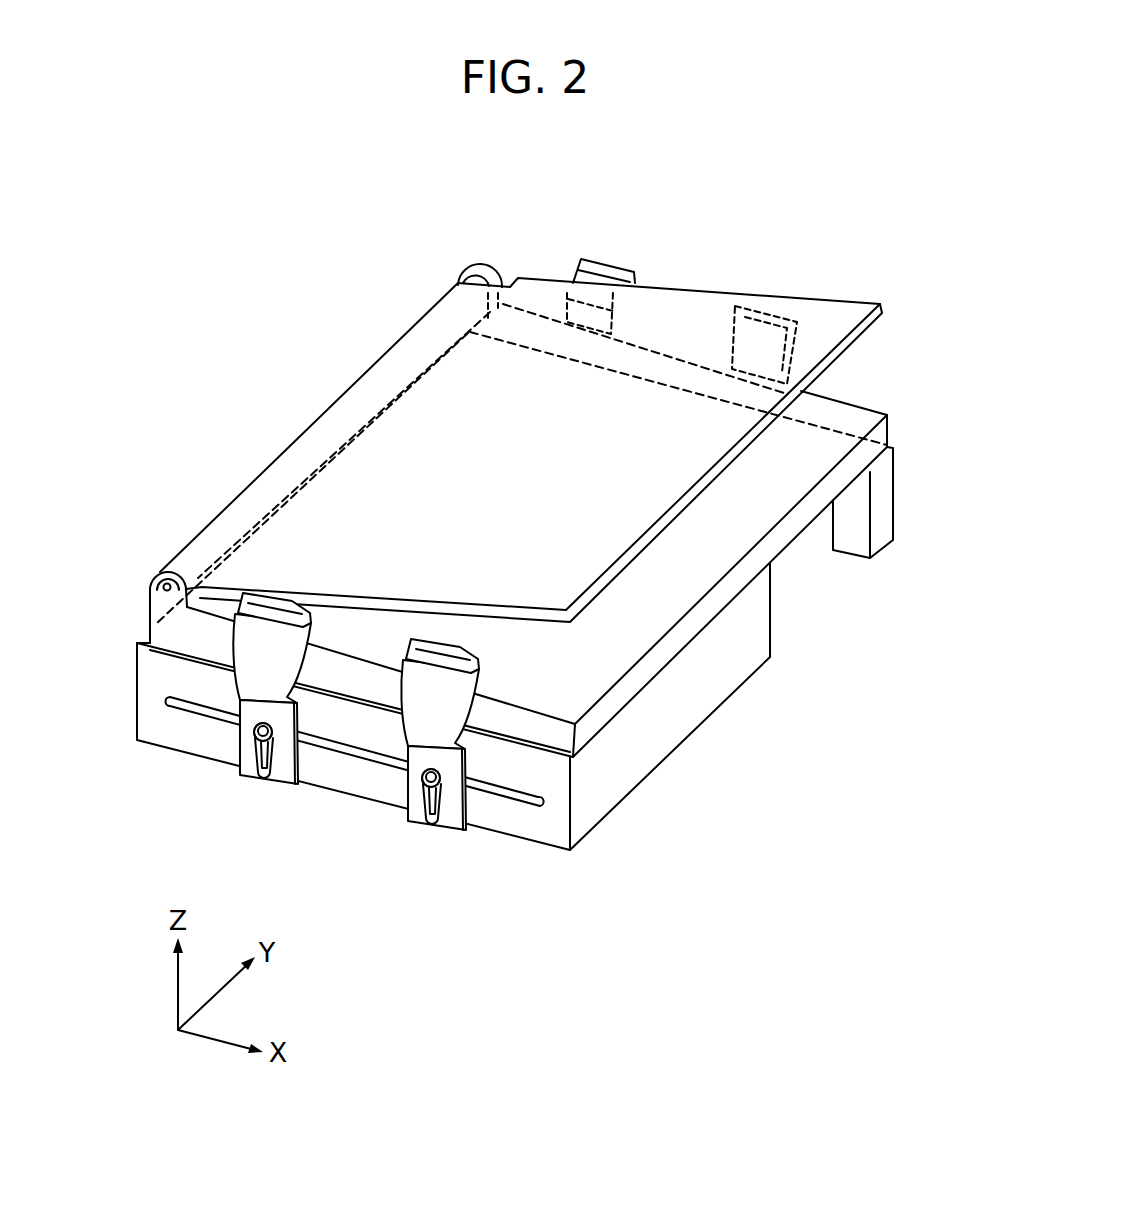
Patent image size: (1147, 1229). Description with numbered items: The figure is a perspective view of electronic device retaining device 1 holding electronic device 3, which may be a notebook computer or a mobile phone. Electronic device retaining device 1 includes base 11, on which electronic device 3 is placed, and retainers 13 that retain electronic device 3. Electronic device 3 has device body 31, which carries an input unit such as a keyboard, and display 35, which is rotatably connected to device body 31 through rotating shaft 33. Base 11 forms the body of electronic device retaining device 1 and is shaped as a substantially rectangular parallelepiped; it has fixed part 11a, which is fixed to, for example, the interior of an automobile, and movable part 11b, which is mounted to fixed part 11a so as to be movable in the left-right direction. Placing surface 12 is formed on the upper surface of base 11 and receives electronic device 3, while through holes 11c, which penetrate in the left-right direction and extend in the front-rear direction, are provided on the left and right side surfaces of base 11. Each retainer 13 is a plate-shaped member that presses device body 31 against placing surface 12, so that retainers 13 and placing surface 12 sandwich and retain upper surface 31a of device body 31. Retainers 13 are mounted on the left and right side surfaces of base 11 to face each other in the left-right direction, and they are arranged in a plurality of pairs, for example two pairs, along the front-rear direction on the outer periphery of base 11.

The electronic device retaining device 1 is at (120, 771).
The electronic device 3 is at (328, 318).
The base 11 is at (165, 717).
The fixed part 11a is at (657, 722).
The movable part 11b is at (883, 505).
The through holes 11c is at (220, 724).
The placing surface 12 is at (142, 642).
The retainers 13 is at (612, 256).
The device body 31 is at (151, 620).
The upper surface 31a is at (673, 572).
The rotating shaft 33 is at (152, 578).
The display 35 is at (438, 460).